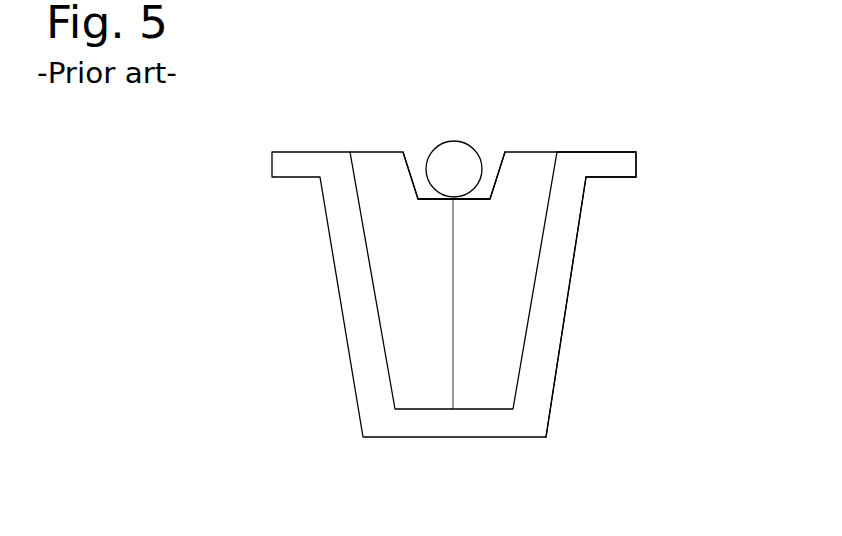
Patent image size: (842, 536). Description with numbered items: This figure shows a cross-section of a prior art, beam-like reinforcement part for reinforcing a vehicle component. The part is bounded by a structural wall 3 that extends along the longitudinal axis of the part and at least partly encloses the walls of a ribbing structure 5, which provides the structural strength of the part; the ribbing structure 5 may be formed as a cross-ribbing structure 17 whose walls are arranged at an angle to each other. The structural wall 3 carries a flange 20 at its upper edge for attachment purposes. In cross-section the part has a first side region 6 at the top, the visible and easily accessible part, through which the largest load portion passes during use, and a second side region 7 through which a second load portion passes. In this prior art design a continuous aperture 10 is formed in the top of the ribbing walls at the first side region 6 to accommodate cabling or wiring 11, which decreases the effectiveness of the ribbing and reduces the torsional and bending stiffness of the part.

The structural wall 3 is at (548, 308).
The ribbing structure 5 is at (501, 280).
The cross-ribbing structure 17 is at (562, 235).
The first side region 6 is at (417, 146).
The second side region 7 is at (330, 313).
The continuous aperture 10 is at (492, 148).
The cabling or wiring 11 is at (453, 177).
The flange 20 is at (622, 163).